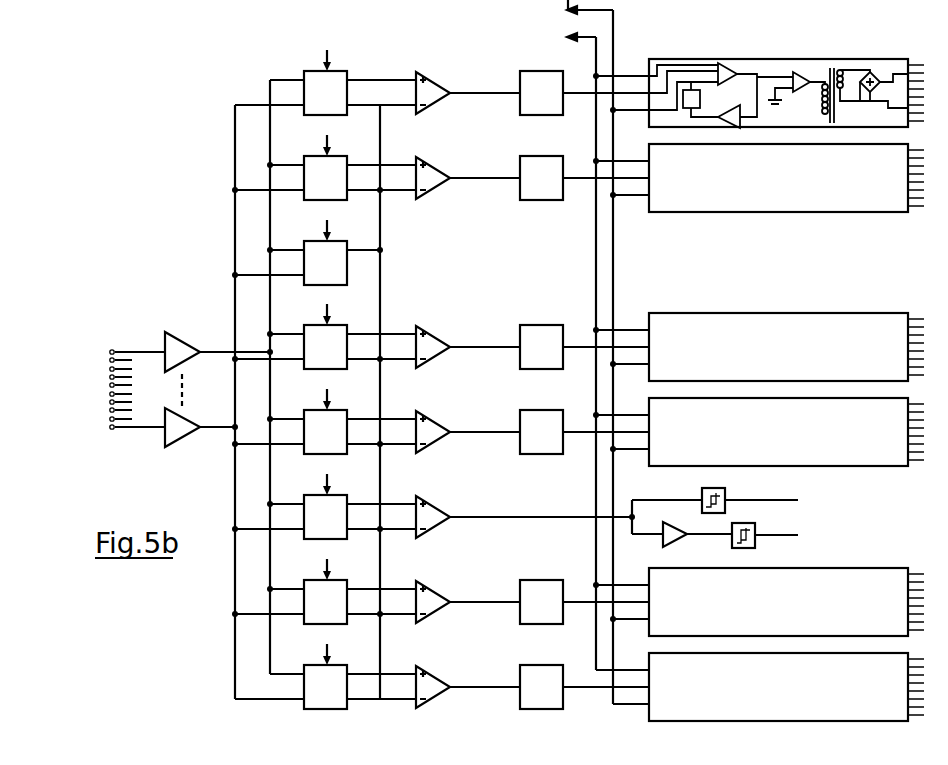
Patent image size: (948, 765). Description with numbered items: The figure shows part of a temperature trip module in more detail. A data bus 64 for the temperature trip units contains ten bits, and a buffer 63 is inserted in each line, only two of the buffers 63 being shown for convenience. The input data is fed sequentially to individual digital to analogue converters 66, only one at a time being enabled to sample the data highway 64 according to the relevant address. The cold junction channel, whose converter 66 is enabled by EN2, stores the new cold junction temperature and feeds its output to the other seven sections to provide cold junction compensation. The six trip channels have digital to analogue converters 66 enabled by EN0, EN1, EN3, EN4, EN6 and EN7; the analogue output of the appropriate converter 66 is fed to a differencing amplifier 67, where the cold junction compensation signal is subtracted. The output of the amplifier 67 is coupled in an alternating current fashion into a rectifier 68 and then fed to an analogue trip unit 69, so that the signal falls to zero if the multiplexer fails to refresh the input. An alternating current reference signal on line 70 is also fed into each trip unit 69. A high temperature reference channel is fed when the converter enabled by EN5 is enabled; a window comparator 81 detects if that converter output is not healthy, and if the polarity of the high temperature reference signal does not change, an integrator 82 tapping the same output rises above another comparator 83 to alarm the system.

The buffer 63 is at (175, 334).
The data bus 64 is at (122, 338).
The digital to analogue converter 66 is at (344, 70).
The differencing amplifier 67 is at (438, 64).
The rectifier 68 is at (534, 101).
The analogue trip unit 69 is at (770, 191).
The line 70 is at (572, 33).
The window comparator 81 is at (702, 490).
The integrator 82 is at (672, 518).
The comparator 83 is at (756, 525).